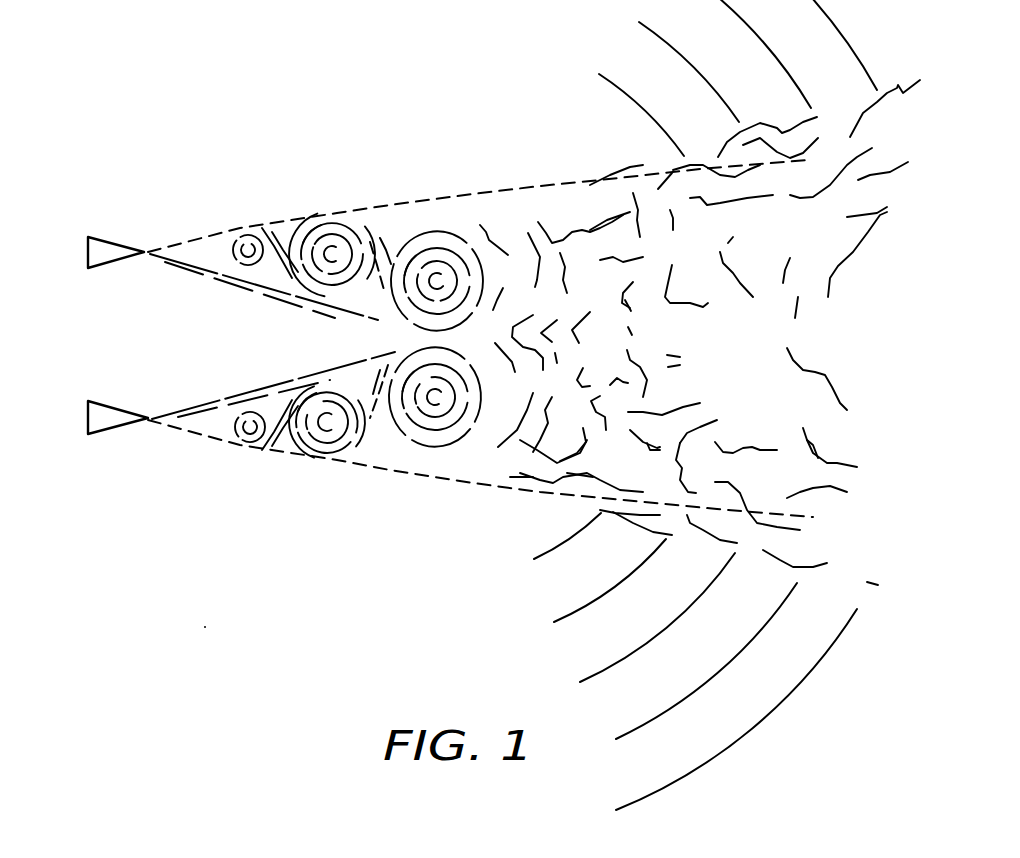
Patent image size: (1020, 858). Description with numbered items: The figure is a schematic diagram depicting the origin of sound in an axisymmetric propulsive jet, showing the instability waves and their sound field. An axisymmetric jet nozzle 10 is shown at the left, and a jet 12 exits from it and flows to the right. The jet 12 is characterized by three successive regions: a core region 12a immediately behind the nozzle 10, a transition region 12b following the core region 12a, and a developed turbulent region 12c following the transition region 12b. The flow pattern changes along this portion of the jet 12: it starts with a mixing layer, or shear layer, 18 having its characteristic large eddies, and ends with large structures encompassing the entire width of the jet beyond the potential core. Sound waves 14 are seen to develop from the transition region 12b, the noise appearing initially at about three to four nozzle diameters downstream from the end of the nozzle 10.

The axisymmetric jet nozzle 10 is at (122, 268).
The jet 12 is at (786, 239).
The core region 12a is at (277, 353).
The transition region 12b is at (398, 353).
The developed turbulent region 12c is at (742, 358).
The sound waves 14 is at (734, 57).
The mixing layer (shear layer) 18 is at (287, 443).